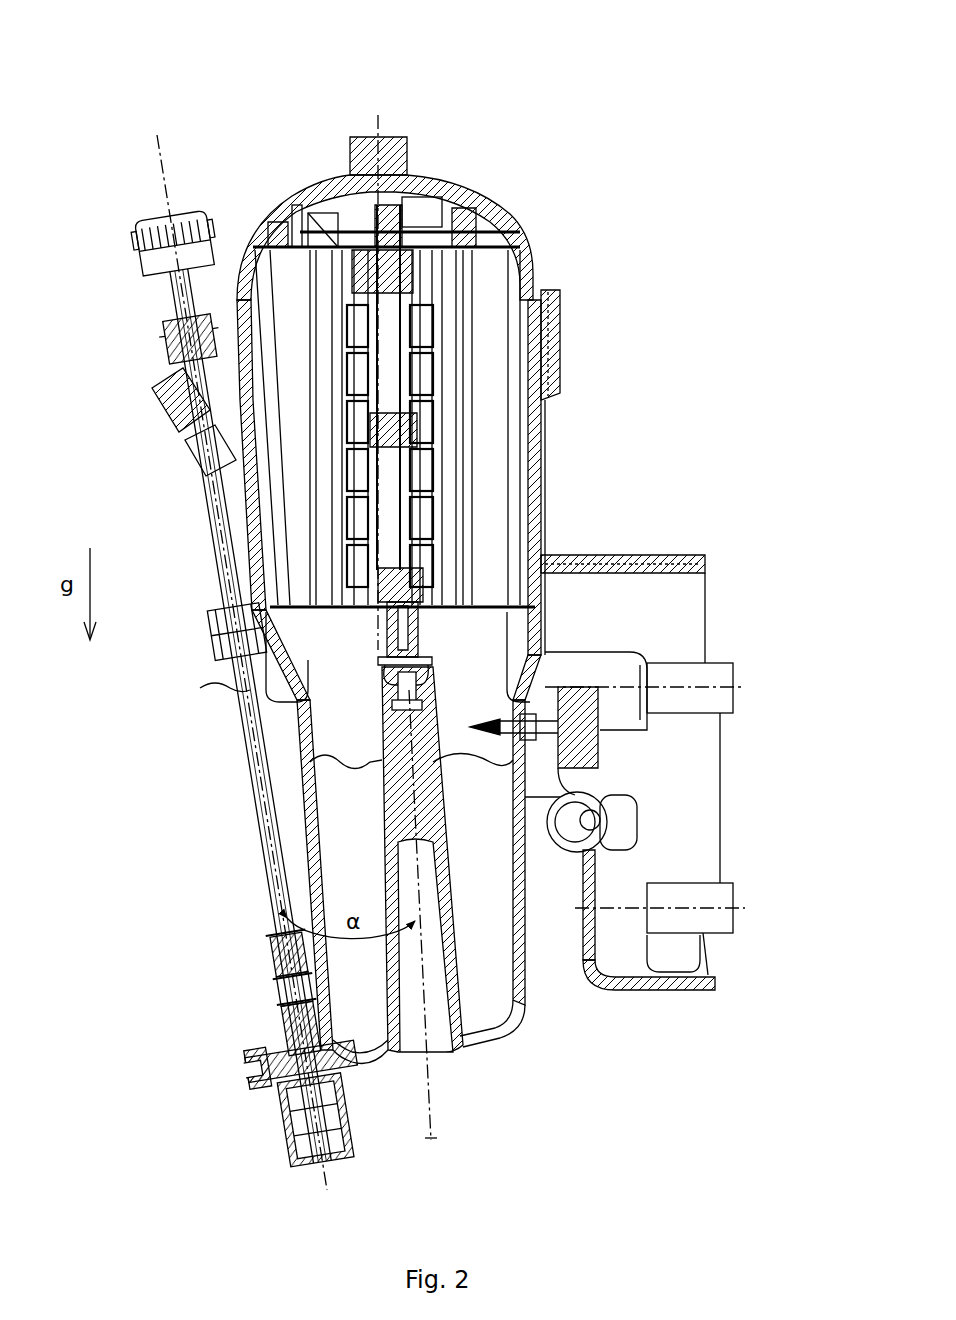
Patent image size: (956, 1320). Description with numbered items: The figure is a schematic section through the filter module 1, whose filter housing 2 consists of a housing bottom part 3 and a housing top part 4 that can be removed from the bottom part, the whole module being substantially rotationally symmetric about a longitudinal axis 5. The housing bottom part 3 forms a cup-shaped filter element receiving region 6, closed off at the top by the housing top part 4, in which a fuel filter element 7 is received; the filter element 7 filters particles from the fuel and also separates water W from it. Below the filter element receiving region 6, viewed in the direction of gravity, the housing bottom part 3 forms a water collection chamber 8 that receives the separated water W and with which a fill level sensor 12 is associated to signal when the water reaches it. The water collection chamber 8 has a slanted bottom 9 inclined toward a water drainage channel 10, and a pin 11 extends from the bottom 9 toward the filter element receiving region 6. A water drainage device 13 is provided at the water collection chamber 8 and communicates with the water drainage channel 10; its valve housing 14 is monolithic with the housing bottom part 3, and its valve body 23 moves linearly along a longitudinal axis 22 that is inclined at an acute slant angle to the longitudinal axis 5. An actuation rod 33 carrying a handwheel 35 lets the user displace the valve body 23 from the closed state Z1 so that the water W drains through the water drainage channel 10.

The filter module 1 is at (380, 86).
The filter housing 2 is at (604, 228).
The housing bottom part 3 is at (563, 338).
The housing top part 4 is at (528, 228).
The longitudinal axis 5 is at (432, 1138).
The filter element receiving region 6 is at (546, 465).
The filter element 7 is at (528, 415).
The water collection chamber 8 is at (530, 979).
The bottom 9 is at (512, 1022).
The water drainage channel 10 is at (372, 1056).
The pin 11 is at (383, 828).
The fill level sensor 12 is at (592, 757).
The water drainage device 13 is at (197, 1047).
The valve housing 14 is at (278, 1135).
The longitudinal axis 22 is at (328, 1188).
The valve body 23 is at (302, 1160).
The actuation rod 33 is at (240, 695).
The handwheel 35 is at (143, 213).
The closed state Z1 is at (254, 1168).
The water W is at (492, 862).